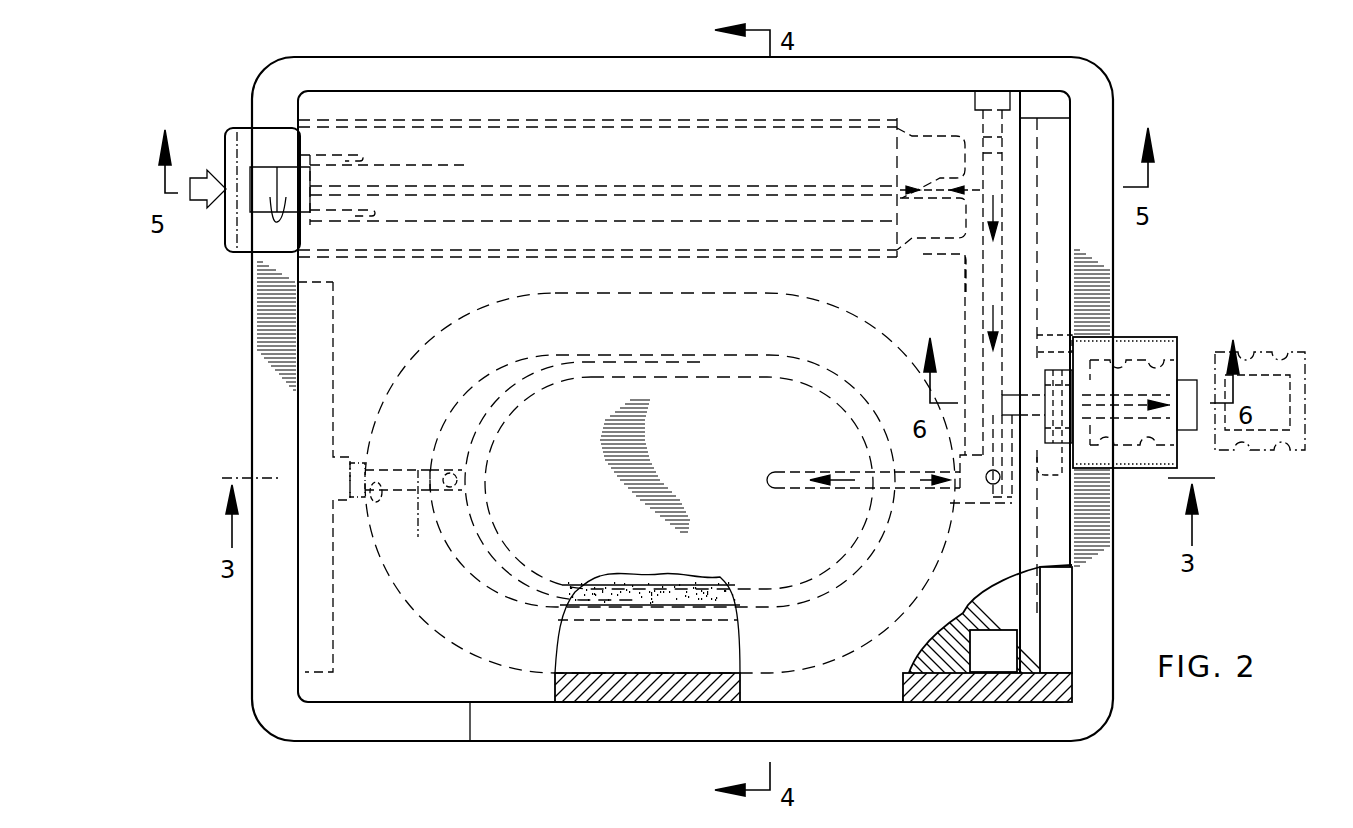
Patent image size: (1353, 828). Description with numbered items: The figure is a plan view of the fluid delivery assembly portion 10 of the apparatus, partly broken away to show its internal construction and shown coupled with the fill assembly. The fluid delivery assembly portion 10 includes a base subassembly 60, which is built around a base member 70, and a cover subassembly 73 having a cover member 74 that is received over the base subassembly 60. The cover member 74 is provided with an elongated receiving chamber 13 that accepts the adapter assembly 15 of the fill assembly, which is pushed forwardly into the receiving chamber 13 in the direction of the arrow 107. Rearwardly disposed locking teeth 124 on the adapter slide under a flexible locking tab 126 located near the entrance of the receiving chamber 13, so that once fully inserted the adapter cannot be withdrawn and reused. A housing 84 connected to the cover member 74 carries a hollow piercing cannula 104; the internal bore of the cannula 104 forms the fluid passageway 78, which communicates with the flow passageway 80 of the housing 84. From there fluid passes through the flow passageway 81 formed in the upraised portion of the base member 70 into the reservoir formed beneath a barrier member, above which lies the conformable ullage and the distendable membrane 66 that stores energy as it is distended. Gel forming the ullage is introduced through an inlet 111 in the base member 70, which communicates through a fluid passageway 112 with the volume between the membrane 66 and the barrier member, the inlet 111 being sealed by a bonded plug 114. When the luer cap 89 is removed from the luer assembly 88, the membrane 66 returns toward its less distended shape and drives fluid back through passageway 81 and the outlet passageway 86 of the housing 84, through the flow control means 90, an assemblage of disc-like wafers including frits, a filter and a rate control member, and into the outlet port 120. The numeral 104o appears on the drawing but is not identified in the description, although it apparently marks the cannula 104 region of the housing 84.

The fluid delivery assembly portion 10 is at (1113, 281).
The elongated receiving chamber 13 is at (722, 125).
The adapter assembly 15 is at (243, 129).
The base subassembly 60 is at (1113, 648).
The distendable membrane 66 is at (652, 596).
The base member 70 is at (658, 703).
The cover subassembly 73 is at (470, 703).
The cover member 74 is at (425, 703).
The fluid passageway 78 is at (968, 200).
The flow passageway 80 is at (983, 287).
The flow passageway 81 is at (828, 490).
The housing 84 is at (1057, 702).
The outlet passageway 86 is at (1024, 402).
The luer assembly 88 is at (1141, 338).
The luer cap 89 is at (1289, 450).
The flow control means 90 is at (1049, 479).
The hollow piercing cannula 104 is at (935, 180).
The chamber outlet 104o is at (905, 207).
The arrow 107 is at (197, 212).
The inlet 111 is at (384, 504).
The fluid passageway 112 is at (421, 517).
The bonded plug 114 is at (381, 463).
The outlet port 120 is at (928, 257).
The rearwardly disposed locking teeth 124 is at (268, 224).
The flexible locking tab 126 is at (323, 177).